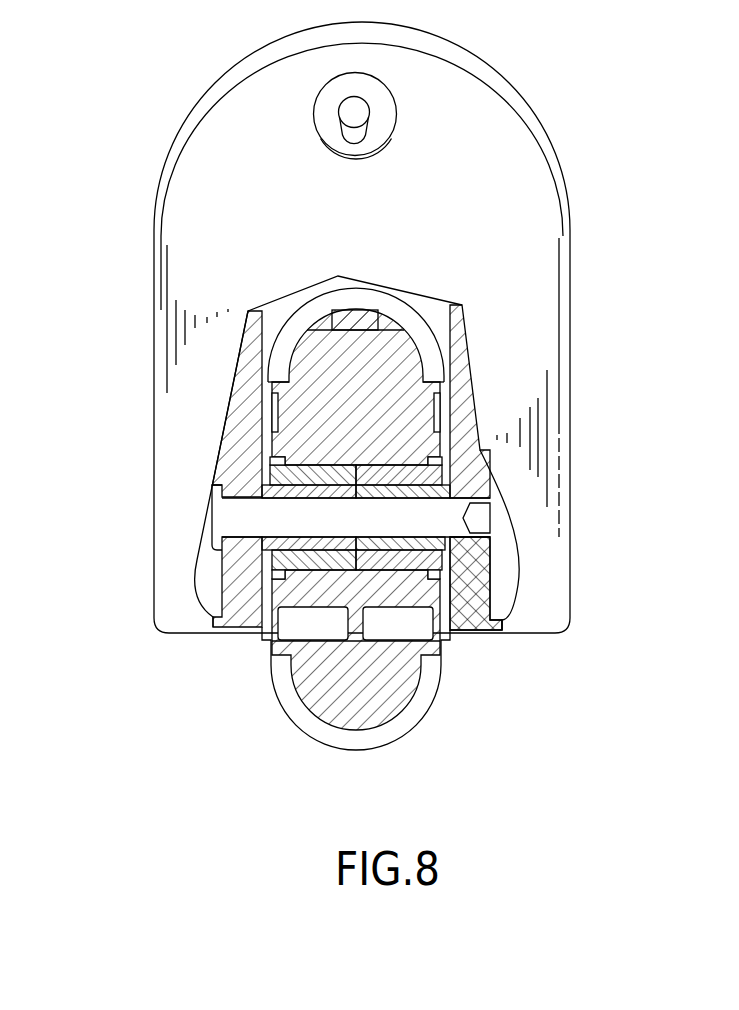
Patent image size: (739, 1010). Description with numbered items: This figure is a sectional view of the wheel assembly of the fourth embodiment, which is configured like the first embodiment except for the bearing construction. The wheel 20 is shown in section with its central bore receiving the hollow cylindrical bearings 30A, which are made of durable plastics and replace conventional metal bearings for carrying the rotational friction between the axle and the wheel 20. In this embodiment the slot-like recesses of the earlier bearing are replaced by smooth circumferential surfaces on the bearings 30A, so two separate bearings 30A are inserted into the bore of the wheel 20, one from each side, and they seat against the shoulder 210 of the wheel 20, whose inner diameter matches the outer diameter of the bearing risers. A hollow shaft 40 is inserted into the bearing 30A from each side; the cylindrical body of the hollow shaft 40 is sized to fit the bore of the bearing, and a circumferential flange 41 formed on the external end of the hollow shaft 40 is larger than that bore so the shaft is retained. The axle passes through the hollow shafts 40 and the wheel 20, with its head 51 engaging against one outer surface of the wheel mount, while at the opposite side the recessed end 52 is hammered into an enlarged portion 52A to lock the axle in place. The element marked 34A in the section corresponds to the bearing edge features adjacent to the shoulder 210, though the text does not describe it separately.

The wheel 20 is at (447, 689).
The shoulder 210 is at (213, 617).
The hollow cylindrical bearing 30A is at (442, 480).
The spacer ring 34A is at (270, 460).
The hollow shaft 40 is at (437, 547).
The circumferential flange 41 is at (262, 555).
The head 51 is at (230, 517).
The recessed end 52 is at (483, 518).
The enlarged portion 52A is at (490, 493).